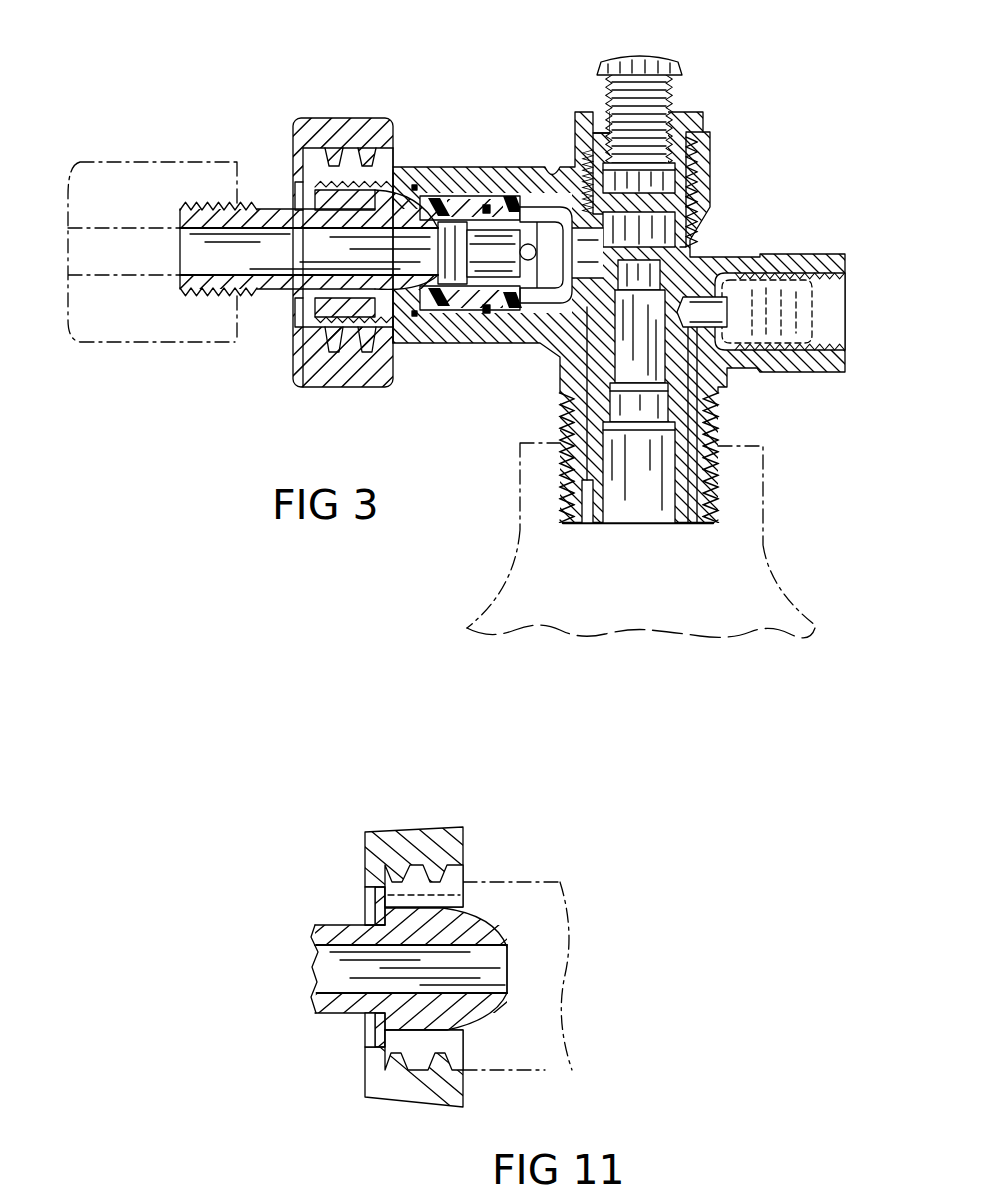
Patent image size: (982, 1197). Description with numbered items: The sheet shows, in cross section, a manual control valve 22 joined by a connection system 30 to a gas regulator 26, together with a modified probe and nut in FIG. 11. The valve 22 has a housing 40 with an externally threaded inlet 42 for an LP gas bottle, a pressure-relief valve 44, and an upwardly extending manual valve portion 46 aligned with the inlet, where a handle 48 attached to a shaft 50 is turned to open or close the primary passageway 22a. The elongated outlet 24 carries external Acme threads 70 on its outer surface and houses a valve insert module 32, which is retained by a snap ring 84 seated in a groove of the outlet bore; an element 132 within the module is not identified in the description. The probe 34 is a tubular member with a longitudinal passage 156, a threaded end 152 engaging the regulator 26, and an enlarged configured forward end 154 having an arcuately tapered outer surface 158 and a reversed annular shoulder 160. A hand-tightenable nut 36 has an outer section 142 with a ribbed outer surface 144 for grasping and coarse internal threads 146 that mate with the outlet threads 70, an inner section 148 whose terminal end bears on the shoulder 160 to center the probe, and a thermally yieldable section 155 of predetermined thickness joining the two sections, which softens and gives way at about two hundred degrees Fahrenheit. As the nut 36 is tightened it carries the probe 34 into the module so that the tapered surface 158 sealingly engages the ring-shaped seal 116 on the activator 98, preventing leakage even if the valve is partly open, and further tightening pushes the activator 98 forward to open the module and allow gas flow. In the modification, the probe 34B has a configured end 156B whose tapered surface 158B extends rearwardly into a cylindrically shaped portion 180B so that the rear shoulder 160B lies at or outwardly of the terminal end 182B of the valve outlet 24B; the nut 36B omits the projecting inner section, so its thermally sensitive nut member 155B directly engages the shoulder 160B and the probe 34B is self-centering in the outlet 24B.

In FIG. 3, the manual control valve 22 is at (626, 269).
In FIG. 3, the passageway 22a is at (643, 277).
In FIG. 3, the outlet 24 is at (493, 162).
In FIG. 3, the gas regulator 26 is at (117, 160).
In FIG. 3, the connection system 30 is at (234, 202).
In FIG. 3, the valve insert module 32 is at (498, 248).
In FIG. 3, the probe 34 is at (222, 292).
In FIG. 3, the nut 36 is at (288, 211).
In FIG. 3, the housing 40 is at (540, 358).
In FIG. 3, the externally threaded inlet 42 is at (719, 489).
In FIG. 3, the pressure-relief valve 44 is at (804, 262).
In FIG. 3, the manual valve portion 46 is at (704, 167).
In FIG. 3, the handle 48 is at (648, 72).
In FIG. 3, the shaft 50 is at (610, 97).
In FIG. 3, the external threads 70 is at (293, 158).
In FIG. 3, the snap ring 84 is at (417, 190).
In FIG. 3, the activator 98 is at (487, 253).
In FIG. 3, the ring-shaped seal 116 is at (432, 318).
In FIG. 3, the retainer 132 is at (518, 195).
In FIG. 3, the outer section 142 is at (292, 148).
In FIG. 3, the ribbed outer surface 144 is at (353, 117).
In FIG. 3, the coarse threads 146 is at (386, 150).
In FIG. 3, the inner section 148 is at (305, 222).
In FIG. 3, the threaded end 152 is at (186, 290).
In FIG. 3, the configured forward end 154 is at (399, 206).
In FIG. 3, the thermally yieldable section 155 is at (296, 182).
In FIG. 3, the passage 156 is at (185, 250).
In FIG. 3, the tapered outer surface 158 is at (403, 333).
In FIG. 3, the annular shoulder 160 is at (358, 298).
In FIG. 11, the valve outlet 24B is at (570, 1073).
In FIG. 11, the modified probe 34B is at (337, 1018).
In FIG. 11, the modified nut 36B is at (459, 1000).
In FIG. 11, the thermally sensitive nut member 155B is at (372, 897).
In FIG. 11, the modified configured end 156B is at (490, 916).
In FIG. 11, the tapered surface 158B is at (483, 1021).
In FIG. 11, the rear shoulder 160B is at (368, 910).
In FIG. 11, the cylindrically shaped portion 180B is at (465, 1050).
In FIG. 11, the terminal end 182B is at (493, 872).